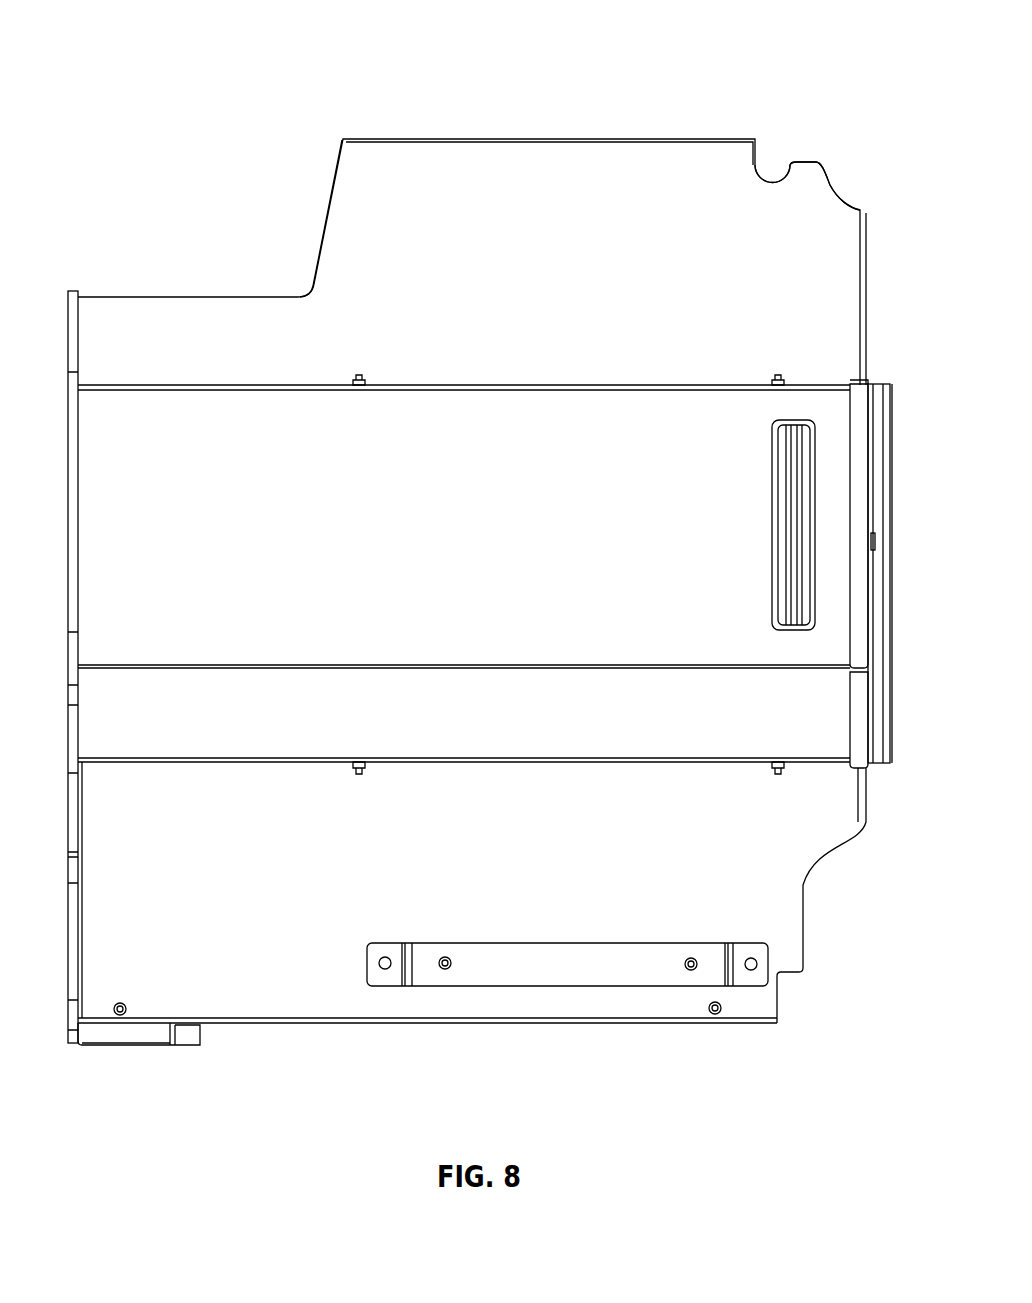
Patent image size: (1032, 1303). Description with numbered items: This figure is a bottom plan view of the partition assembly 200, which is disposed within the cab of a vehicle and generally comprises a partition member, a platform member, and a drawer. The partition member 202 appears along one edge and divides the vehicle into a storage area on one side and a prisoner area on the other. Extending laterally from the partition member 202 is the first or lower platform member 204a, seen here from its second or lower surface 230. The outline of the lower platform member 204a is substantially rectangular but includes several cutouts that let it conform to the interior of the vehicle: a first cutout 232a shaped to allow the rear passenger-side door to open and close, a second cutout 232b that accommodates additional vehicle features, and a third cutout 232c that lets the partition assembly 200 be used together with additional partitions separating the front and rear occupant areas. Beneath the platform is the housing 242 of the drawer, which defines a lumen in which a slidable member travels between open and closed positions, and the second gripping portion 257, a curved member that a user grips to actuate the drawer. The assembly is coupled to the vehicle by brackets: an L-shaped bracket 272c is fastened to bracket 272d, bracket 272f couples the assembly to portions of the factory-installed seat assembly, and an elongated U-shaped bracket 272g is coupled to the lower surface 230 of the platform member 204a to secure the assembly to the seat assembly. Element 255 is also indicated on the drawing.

The partition assembly 200 is at (170, 44).
The partition member 202 is at (73, 367).
The first or lower platform member 204a is at (445, 170).
The second or lower surface 230 is at (472, 227).
The first cutout 232a is at (808, 163).
The second cutout 232b is at (803, 893).
The third cutout 232c is at (330, 208).
The housing 242 is at (308, 472).
The bracket 255 is at (862, 648).
The second gripping portion 257 is at (880, 423).
The L-shaped bracket 272c is at (778, 537).
The bracket 272d is at (805, 460).
The bracket 272f is at (187, 1030).
The elongated U-shaped bracket 272g is at (621, 967).